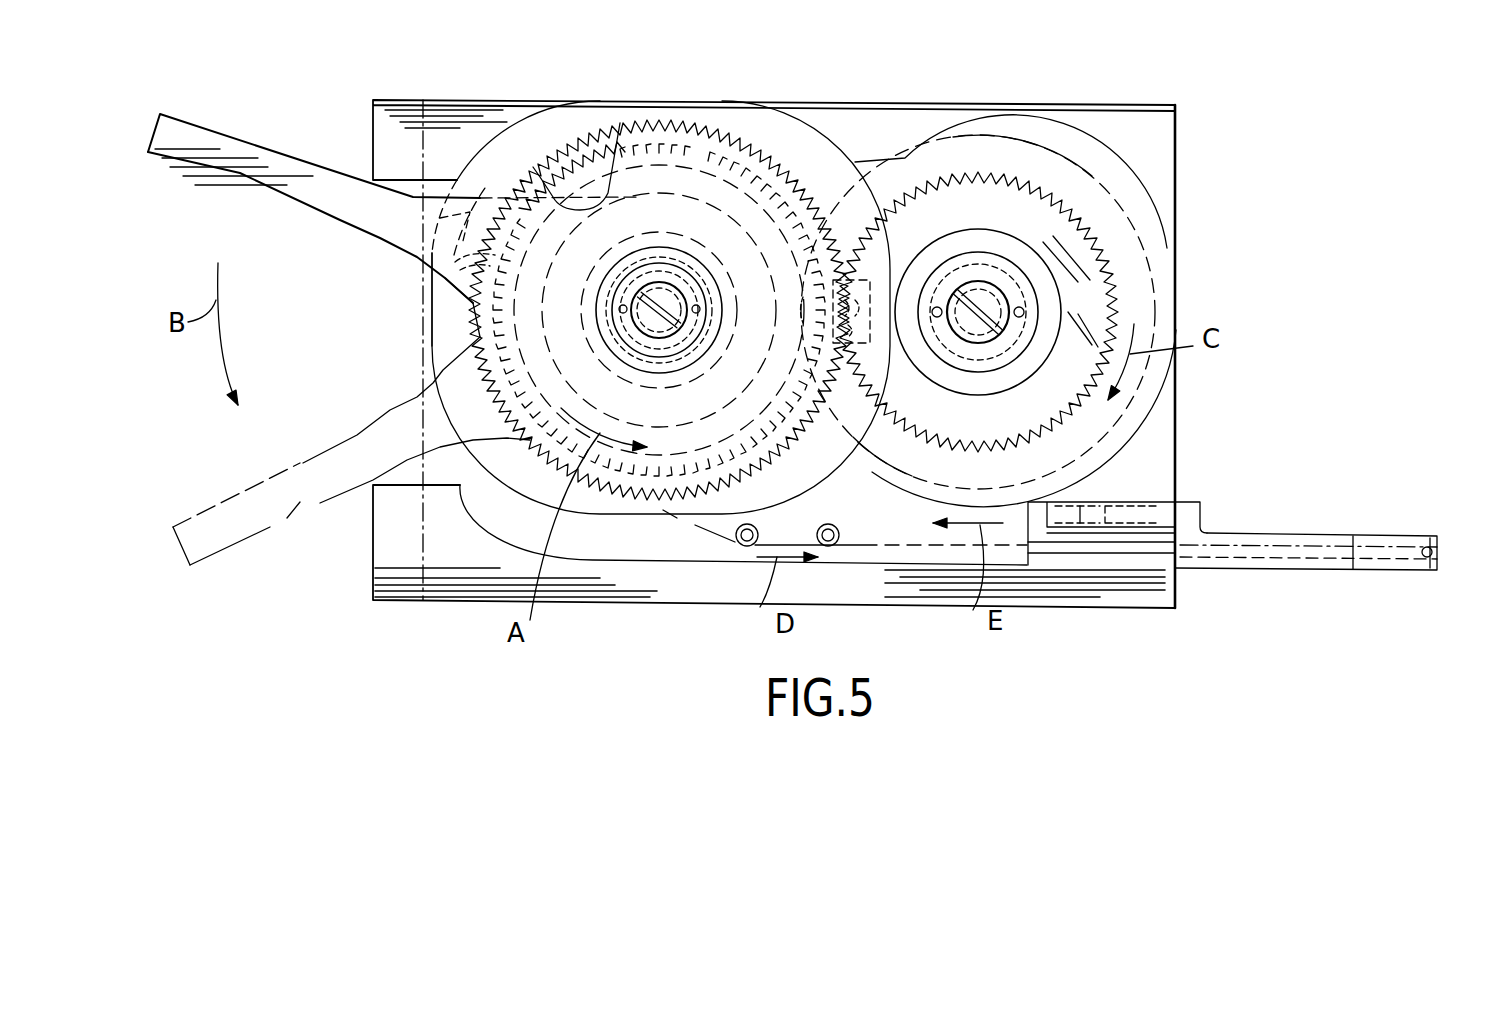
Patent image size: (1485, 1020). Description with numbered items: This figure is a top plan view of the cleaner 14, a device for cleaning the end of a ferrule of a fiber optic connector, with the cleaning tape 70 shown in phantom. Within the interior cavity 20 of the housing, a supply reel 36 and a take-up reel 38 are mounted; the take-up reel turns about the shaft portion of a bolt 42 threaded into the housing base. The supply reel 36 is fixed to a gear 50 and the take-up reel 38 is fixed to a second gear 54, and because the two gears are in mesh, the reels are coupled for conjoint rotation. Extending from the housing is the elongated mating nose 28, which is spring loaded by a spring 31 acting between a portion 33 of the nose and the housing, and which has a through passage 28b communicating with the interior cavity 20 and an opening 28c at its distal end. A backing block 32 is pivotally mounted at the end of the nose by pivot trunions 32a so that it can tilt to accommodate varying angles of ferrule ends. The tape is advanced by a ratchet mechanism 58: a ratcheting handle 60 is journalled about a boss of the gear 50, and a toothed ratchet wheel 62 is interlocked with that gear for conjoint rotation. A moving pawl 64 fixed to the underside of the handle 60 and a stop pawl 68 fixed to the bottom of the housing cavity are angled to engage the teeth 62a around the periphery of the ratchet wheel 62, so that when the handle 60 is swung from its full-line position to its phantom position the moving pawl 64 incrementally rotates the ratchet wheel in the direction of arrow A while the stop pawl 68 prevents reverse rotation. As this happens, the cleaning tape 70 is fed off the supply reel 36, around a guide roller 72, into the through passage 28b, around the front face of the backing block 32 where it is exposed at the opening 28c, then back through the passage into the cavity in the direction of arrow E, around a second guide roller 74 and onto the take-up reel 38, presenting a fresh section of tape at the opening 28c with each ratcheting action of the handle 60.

The cleaner 14 is at (1198, 110).
The interior cavity 20 is at (900, 562).
The mating nose 28 is at (1322, 552).
The through passage 28b is at (1263, 545).
The opening 28c is at (1443, 537).
The spring 31 is at (1147, 512).
The backing block 32 is at (1400, 573).
The pivot trunions 32a is at (1427, 558).
The portion of the nose 33 is at (1180, 502).
The supply reel 36 is at (700, 270).
The take-up reel 38 is at (977, 243).
The bolt 42 is at (1000, 306).
The gear 50 is at (700, 143).
The second gear 54 is at (1030, 207).
The ratchet mechanism 58 is at (448, 307).
The ratcheting handle 60 is at (293, 175).
The ratchet wheel 62 is at (606, 122).
The teeth 62a is at (592, 155).
The moving pawl 64 is at (440, 358).
The stop pawl 68 is at (845, 175).
The cleaning tape 70 is at (717, 533).
The guide roller 72 is at (742, 546).
The second guide roller 74 is at (828, 546).